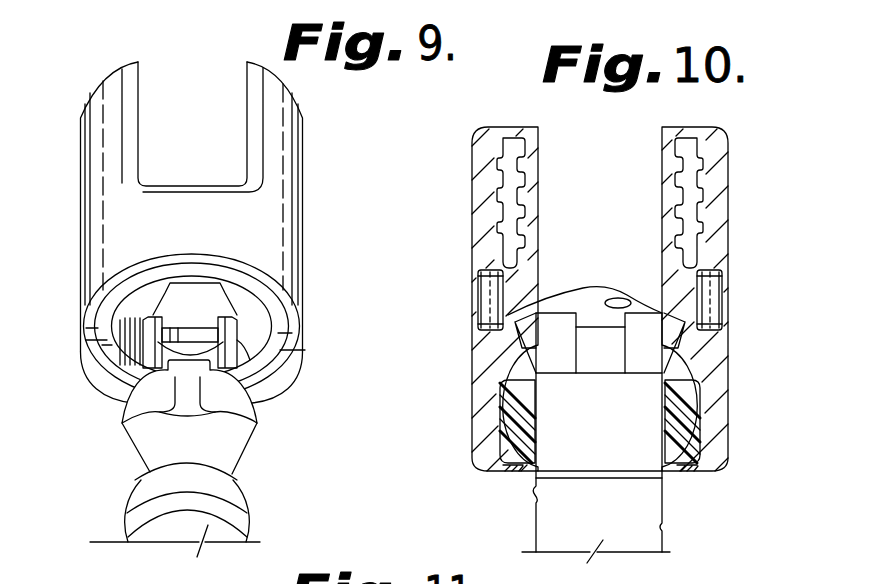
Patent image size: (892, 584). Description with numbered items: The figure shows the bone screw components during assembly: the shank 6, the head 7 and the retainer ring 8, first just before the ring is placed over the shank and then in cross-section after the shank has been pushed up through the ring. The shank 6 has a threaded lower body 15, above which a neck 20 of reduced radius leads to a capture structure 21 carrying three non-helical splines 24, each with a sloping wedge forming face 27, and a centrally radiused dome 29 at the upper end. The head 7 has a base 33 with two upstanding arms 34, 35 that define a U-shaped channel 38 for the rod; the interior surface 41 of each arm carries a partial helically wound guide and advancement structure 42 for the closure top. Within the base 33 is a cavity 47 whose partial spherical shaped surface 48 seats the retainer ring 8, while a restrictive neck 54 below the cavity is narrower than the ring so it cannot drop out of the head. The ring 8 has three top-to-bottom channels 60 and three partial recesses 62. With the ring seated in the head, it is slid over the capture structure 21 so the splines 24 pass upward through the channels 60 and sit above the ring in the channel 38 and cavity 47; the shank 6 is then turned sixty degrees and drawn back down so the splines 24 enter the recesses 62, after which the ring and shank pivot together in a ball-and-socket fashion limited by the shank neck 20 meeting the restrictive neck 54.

In FIG. 9, the shank 6 is at (248, 528).
In FIG. 10, the shank 6 is at (661, 527).
In FIG. 9, the head 7 is at (303, 243).
In FIG. 10, the head 7 is at (726, 354).
In FIG. 9, the retainer ring 8 is at (245, 370).
In FIG. 10, the retainer ring 8 is at (688, 440).
In FIG. 9, the lower body 15 is at (160, 533).
In FIG. 9, the neck 20 is at (135, 452).
In FIG. 10, the neck 20 is at (540, 447).
In FIG. 9, the capture structure 21 is at (258, 423).
In FIG. 10, the capture structure 21 is at (636, 318).
In FIG. 9, the spline 24 is at (243, 405).
In FIG. 10, the spline 24 is at (613, 335).
In FIG. 9, the wedge forming face 27 is at (124, 423).
In FIG. 10, the wedge forming face 27 is at (587, 357).
In FIG. 10, the dome 29 is at (583, 287).
In FIG. 9, the base 33 is at (80, 272).
In FIG. 9, the arm 34 is at (80, 143).
In FIG. 9, the arm 35 is at (303, 122).
In FIG. 9, the U-shaped channel 38 is at (138, 185).
In FIG. 10, the interior surface 41 is at (522, 200).
In FIG. 10, the guide and advancement structure 42 is at (667, 198).
In FIG. 10, the cavity 47 is at (508, 365).
In FIG. 10, the partial spherical shaped surface 48 is at (496, 412).
In FIG. 9, the restrictive neck 54 is at (233, 290).
In FIG. 10, the restrictive neck 54 is at (680, 474).
In FIG. 9, the channel 60 is at (243, 355).
In FIG. 10, the channel 60 is at (600, 300).
In FIG. 9, the recess 62 is at (195, 333).